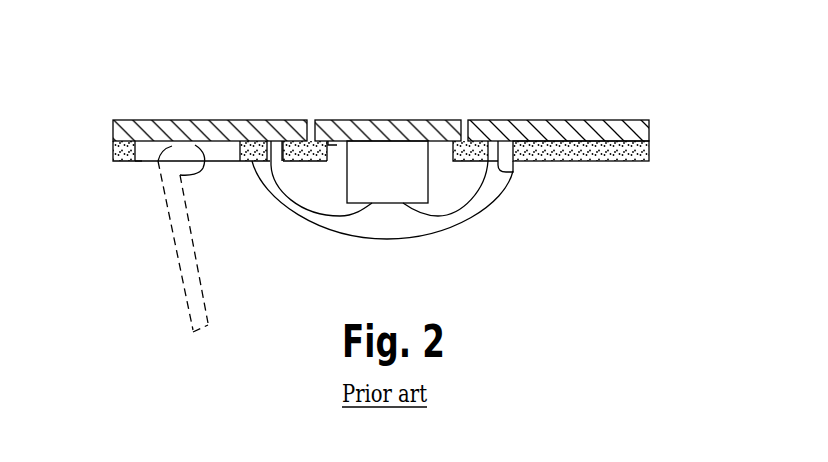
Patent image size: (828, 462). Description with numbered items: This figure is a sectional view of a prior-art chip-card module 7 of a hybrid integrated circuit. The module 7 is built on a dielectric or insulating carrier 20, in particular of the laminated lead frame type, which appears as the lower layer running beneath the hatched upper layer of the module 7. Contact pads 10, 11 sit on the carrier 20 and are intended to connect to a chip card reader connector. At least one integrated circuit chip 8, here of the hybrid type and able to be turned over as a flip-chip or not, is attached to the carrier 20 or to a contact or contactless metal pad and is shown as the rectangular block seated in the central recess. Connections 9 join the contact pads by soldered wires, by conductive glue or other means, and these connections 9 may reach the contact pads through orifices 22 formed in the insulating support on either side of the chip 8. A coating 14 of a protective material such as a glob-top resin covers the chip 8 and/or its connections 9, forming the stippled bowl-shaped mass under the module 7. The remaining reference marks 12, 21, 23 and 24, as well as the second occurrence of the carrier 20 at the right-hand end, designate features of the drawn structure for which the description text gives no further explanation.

The chip-card module 7 is at (144, 99).
The integrated circuit chip 8 is at (393, 153).
The connections 9 is at (300, 212).
The contact pad 10 is at (547, 120).
The contact pad 11 is at (213, 147).
The board top layer 12 is at (220, 143).
The coating 14 is at (378, 227).
The dielectric carrier 20 is at (113, 152).
The gap between board parts 21 is at (333, 143).
The orifices 22 is at (263, 175).
The cavity edge 23 is at (142, 162).
The tool 24 is at (178, 228).